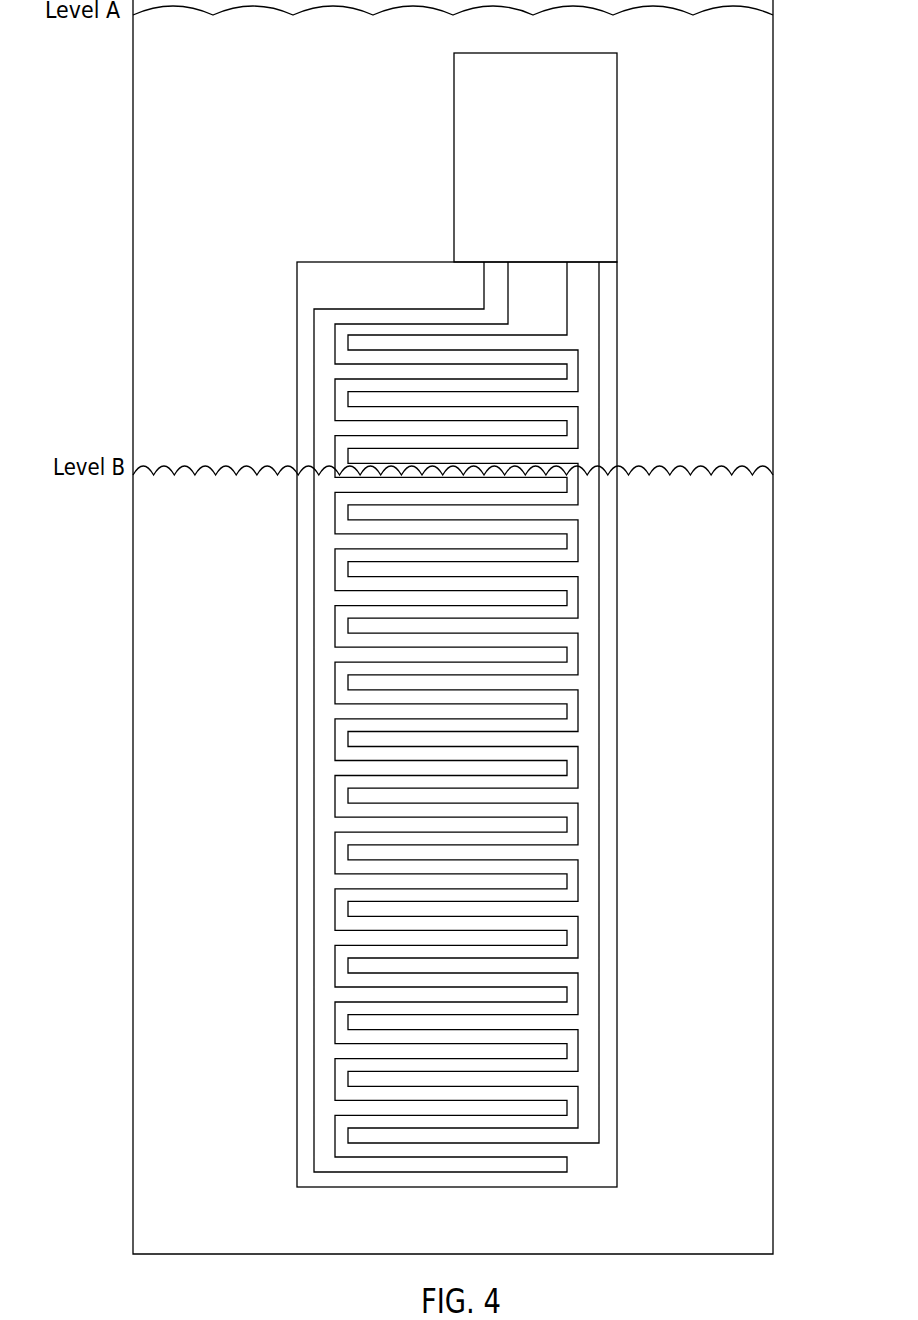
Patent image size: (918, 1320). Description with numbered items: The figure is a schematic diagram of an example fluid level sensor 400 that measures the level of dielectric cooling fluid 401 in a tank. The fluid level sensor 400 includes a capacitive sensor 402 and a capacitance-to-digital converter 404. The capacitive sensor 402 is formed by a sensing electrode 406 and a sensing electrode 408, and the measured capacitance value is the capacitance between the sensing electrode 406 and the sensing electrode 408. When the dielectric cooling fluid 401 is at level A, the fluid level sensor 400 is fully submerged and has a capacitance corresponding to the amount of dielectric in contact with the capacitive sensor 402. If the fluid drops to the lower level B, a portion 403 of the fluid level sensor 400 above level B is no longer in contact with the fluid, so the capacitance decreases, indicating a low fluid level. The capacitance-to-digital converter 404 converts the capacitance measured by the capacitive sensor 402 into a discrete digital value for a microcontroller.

The fluid level sensor 400 is at (268, 361).
The dielectric cooling fluid 401 is at (253, 648).
The capacitive sensor 402 is at (314, 815).
The portion of the fluid level sensor 403 is at (296, 376).
The capacitance-to-digital converter 404 is at (542, 203).
The sensing electrode 406 is at (400, 324).
The sensing electrode 408 is at (458, 335).